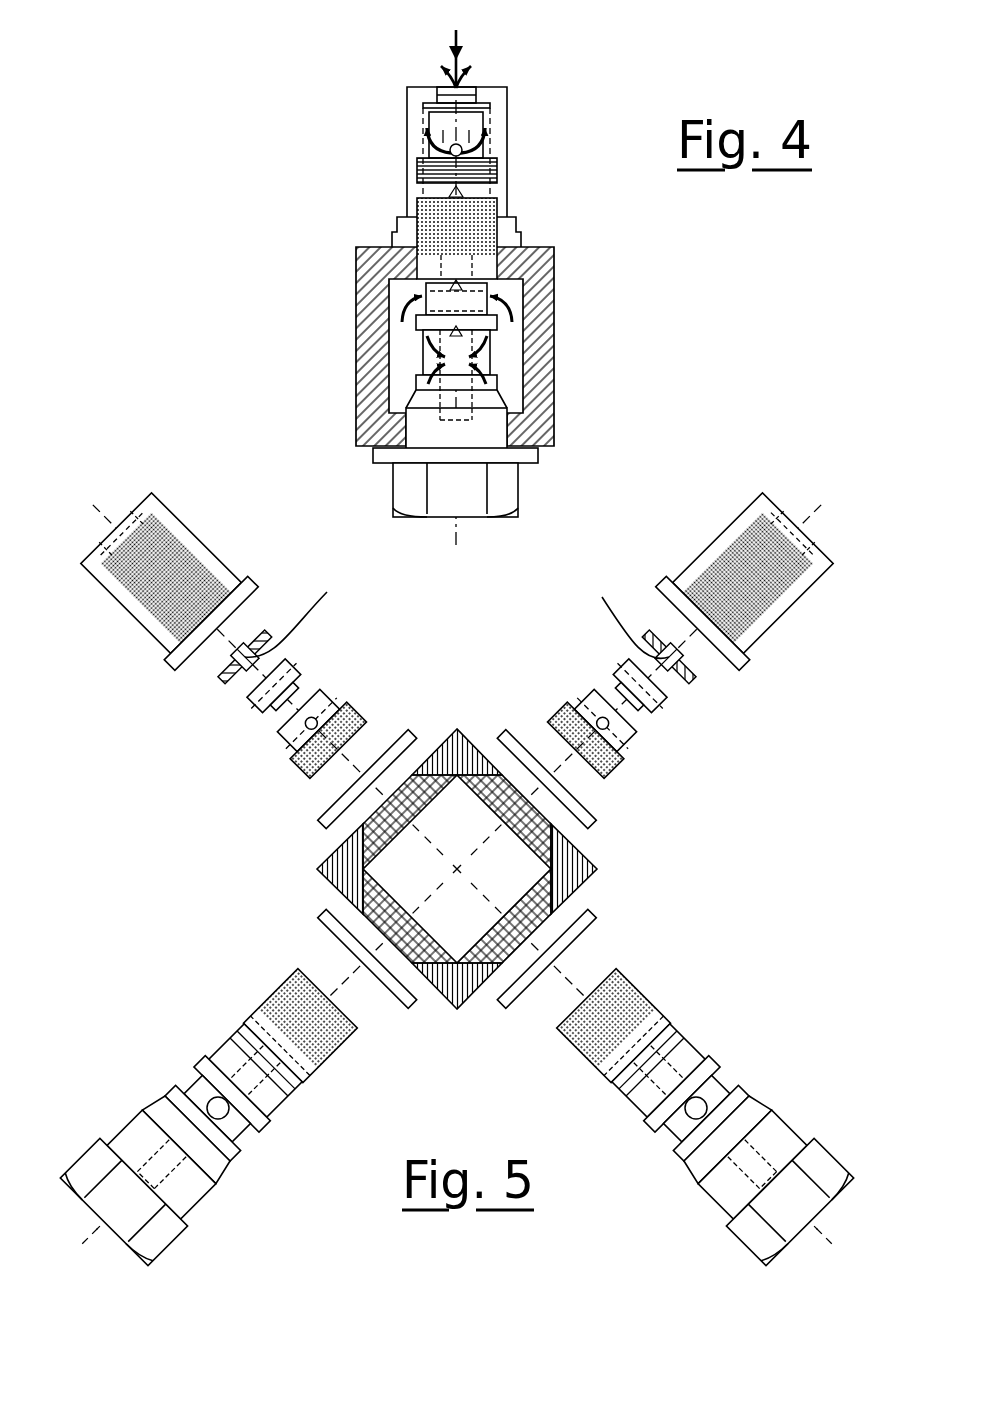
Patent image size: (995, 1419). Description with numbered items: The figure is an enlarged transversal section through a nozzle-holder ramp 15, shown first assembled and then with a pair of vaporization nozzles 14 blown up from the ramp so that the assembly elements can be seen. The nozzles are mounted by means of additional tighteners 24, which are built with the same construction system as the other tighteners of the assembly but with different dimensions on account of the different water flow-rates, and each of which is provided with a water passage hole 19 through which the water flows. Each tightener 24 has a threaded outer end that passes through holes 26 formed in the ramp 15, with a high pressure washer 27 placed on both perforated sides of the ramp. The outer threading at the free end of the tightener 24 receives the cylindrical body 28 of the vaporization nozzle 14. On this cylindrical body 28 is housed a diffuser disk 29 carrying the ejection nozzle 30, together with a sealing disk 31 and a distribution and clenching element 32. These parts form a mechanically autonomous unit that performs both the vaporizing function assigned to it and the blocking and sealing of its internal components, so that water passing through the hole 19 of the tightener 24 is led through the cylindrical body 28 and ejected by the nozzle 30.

In FIG. 4, the vaporization nozzle 14 is at (451, 154).
In FIG. 5, the vaporization nozzle 14 is at (483, 646).
In FIG. 4, the ramp 15 is at (537, 375).
In FIG. 4, the water passage hole 19 is at (490, 342).
In FIG. 5, the water passage hole 19 is at (215, 1108).
In FIG. 4, the tightener 24 is at (487, 403).
In FIG. 5, the tightener 24 is at (133, 1138).
In FIG. 5, the holes 26 is at (497, 783).
In FIG. 5, the high pressure washer 27 is at (407, 747).
In FIG. 4, the cylindrical body 28 is at (503, 144).
In FIG. 5, the cylindrical body 28 is at (133, 613).
In FIG. 5, the diffuser disk 29 is at (220, 672).
In FIG. 5, the ejection nozzle 30 is at (682, 552).
In FIG. 5, the sealing disk 31 is at (255, 705).
In FIG. 4, the distribution and clenching element 32 is at (467, 137).
In FIG. 5, the distribution and clenching element 32 is at (283, 737).